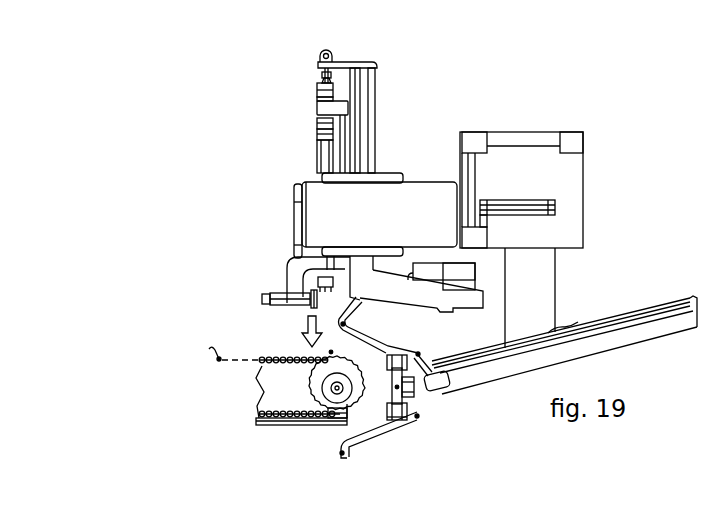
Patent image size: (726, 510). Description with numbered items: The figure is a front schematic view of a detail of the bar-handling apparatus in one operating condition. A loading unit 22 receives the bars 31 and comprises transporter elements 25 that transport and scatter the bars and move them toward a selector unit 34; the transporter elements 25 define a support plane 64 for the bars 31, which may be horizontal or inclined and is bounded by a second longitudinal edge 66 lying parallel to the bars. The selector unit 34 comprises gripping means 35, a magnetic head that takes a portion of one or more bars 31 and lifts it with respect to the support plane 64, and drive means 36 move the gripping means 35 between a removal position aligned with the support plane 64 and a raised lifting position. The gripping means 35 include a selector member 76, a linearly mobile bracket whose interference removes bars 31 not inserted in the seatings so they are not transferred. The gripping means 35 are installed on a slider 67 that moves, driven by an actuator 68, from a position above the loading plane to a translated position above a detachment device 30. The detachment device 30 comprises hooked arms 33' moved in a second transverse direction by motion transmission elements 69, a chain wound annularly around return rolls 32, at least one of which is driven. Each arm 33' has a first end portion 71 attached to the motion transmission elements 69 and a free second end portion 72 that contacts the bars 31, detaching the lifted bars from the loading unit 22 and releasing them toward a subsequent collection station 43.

The loading unit 22 is at (239, 412).
The transporter elements 25 is at (307, 432).
The detachment device 30 is at (402, 446).
The bars 31 is at (321, 356).
The return rolls 32 is at (412, 392).
The arms 33' is at (396, 391).
The selector unit 34 is at (266, 167).
The gripping means 35 is at (324, 283).
The drive means 36 is at (311, 149).
The collection station 43 is at (661, 288).
The support plane 64 is at (217, 360).
The second longitudinal edge 66 is at (328, 361).
The slider 67 is at (432, 196).
The actuator 68 is at (518, 206).
The motion transmission elements 69 is at (398, 414).
The first end portion 71 is at (420, 354).
The second end portion 72 is at (345, 324).
The selector member 76 is at (263, 311).